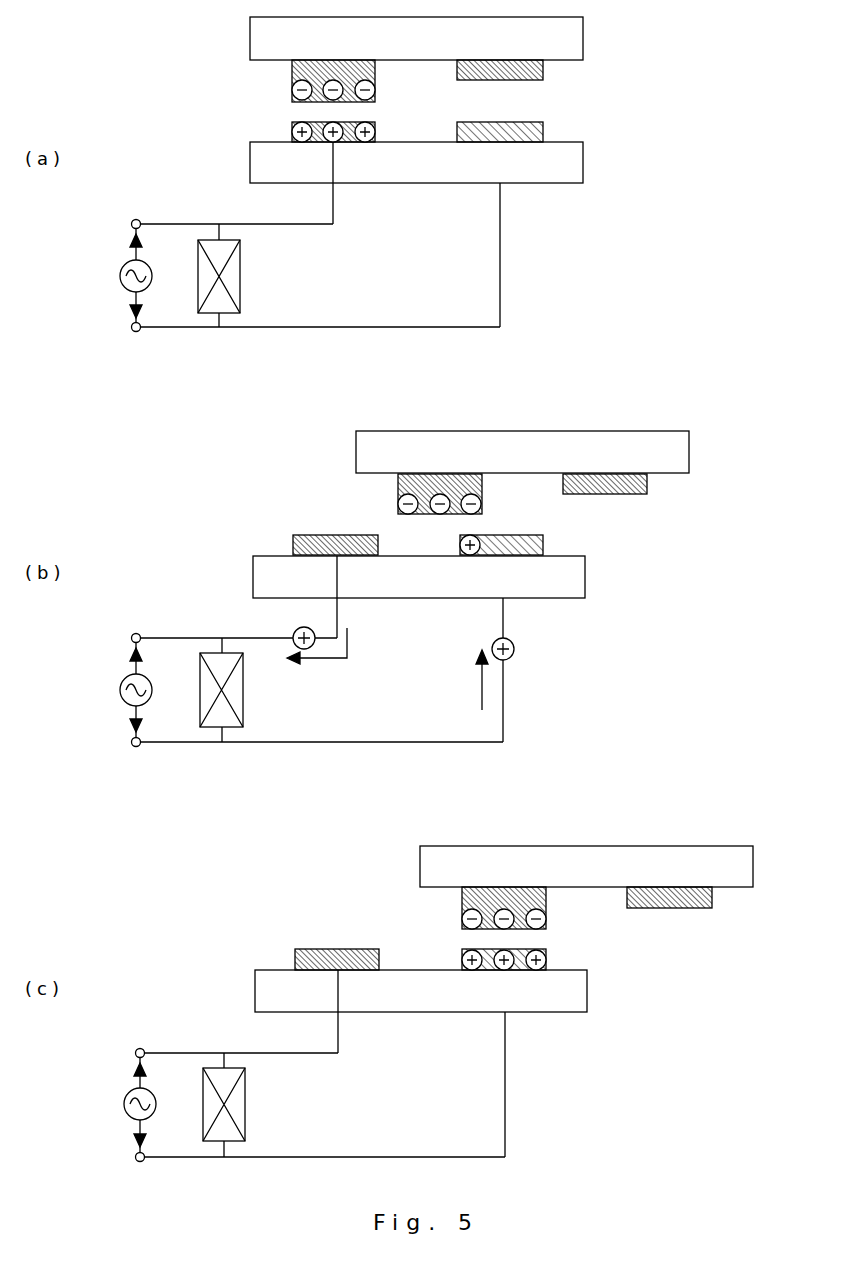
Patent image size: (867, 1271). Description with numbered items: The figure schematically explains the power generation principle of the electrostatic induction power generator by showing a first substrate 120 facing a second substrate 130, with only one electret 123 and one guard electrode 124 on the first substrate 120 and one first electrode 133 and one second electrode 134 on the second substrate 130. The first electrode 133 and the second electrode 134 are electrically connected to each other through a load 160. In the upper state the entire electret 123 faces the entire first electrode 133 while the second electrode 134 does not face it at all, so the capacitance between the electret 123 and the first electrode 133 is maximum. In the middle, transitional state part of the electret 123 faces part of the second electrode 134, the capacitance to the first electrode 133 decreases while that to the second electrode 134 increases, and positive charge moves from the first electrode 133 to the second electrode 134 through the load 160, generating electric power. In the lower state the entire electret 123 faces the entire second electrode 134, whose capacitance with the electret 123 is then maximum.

The first substrate 120 is at (501, 452).
The second substrate 130 is at (418, 577).
The electret 123 is at (292, 90).
The guard electrode 124 is at (522, 72).
The first electrode 133 is at (292, 126).
The second electrode 134 is at (535, 133).
The load 160 is at (230, 276).